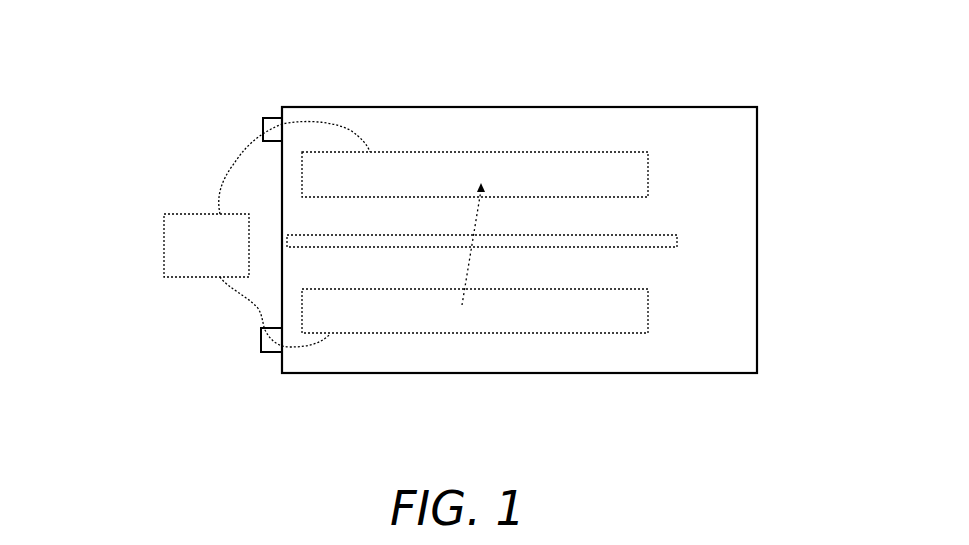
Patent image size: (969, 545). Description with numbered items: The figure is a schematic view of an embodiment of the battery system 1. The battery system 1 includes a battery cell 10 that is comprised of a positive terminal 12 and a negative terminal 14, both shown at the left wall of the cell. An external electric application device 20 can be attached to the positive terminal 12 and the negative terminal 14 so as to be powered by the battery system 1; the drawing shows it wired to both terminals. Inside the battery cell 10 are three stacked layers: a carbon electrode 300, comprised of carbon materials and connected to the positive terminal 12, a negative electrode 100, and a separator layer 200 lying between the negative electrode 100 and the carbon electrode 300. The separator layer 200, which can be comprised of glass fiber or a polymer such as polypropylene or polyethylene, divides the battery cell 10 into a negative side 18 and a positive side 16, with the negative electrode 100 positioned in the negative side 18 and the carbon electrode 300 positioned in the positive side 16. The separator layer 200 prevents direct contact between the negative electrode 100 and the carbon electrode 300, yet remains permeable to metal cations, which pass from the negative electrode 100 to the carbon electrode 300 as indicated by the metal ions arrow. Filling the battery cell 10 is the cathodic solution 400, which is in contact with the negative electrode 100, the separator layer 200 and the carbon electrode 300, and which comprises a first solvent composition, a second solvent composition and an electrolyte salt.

The battery system 1 is at (173, 122).
The battery cell 10 is at (757, 205).
The positive terminal 12 is at (263, 118).
The negative terminal 14 is at (260, 352).
The positive side 16 is at (635, 132).
The negative side 18 is at (728, 342).
The external electric application device 20 is at (163, 226).
The negative electrode 100 is at (499, 311).
The separator layer 200 is at (508, 240).
The carbon electrode 300 is at (497, 174).
The cathodic solution 400 is at (494, 135).